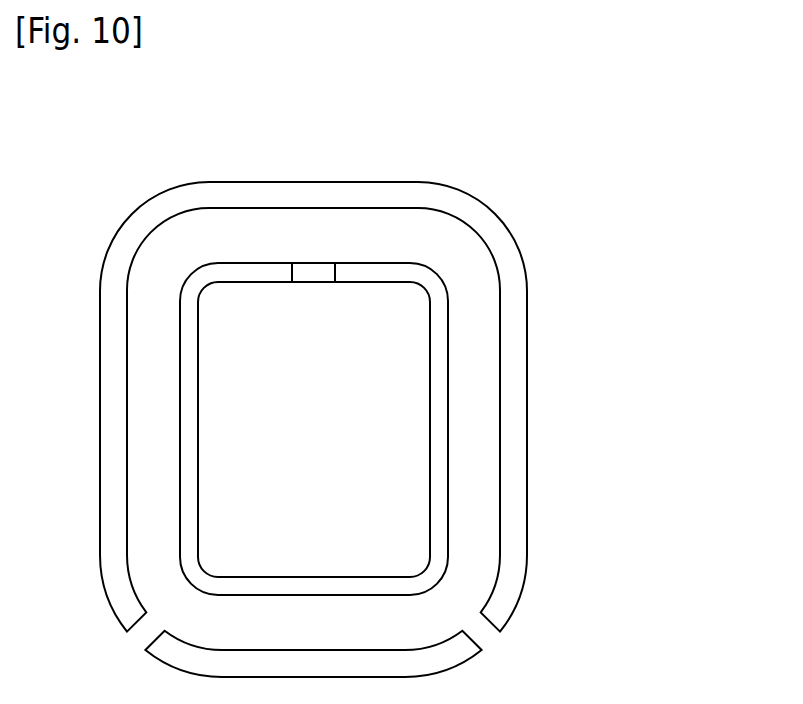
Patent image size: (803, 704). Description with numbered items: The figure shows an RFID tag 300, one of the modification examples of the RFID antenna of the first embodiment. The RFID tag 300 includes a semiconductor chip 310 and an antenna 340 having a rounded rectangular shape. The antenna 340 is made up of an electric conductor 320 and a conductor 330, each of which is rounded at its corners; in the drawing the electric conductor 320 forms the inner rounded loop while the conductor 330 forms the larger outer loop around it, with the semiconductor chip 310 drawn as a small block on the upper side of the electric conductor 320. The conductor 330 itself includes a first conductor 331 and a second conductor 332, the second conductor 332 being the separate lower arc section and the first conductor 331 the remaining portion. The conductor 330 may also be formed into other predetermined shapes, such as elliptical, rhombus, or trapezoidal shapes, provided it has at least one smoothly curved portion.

The RFID tag 300 is at (112, 116).
The semiconductor chip 310 is at (315, 272).
The electric conductor 320 is at (438, 528).
The conductor 330 is at (392, 436).
The first conductor 331 is at (505, 597).
The second conductor 332 is at (457, 659).
The antenna 340 is at (425, 436).